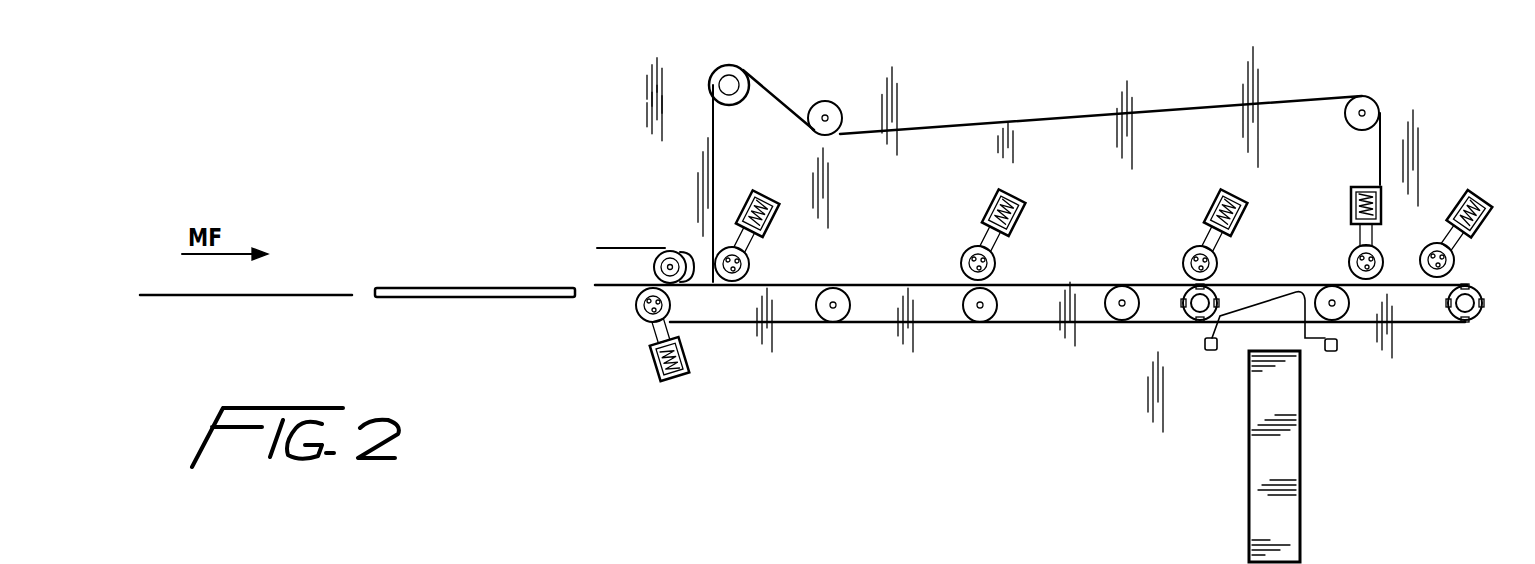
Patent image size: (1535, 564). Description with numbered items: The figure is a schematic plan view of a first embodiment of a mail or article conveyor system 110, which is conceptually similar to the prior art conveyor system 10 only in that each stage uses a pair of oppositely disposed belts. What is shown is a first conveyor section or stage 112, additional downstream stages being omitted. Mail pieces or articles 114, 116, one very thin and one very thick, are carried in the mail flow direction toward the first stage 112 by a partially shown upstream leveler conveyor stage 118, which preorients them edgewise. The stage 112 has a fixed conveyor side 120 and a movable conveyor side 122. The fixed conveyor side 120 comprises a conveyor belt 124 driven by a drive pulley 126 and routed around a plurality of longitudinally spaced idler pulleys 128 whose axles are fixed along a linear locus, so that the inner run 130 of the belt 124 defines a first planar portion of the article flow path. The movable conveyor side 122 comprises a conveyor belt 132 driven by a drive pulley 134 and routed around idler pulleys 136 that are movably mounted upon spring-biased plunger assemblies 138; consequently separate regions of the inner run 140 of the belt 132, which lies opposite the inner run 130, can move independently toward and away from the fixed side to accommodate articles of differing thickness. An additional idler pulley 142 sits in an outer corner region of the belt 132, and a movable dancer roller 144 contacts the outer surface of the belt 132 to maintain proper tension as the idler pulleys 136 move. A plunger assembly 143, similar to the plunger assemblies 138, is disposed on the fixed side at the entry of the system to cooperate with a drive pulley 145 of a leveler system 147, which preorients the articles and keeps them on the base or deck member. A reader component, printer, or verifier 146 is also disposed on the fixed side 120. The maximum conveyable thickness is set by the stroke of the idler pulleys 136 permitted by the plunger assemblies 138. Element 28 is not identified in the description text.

The prior art conveyor system 10 is at (800, 563).
The insulation layer 28 is at (633, 552).
The conveyor system 110 is at (970, 80).
The first conveyor section or stage 112 is at (621, 126).
The mail piece or article 114 is at (165, 295).
The mail piece or article 116 is at (402, 288).
The upstream leveler conveyor stage 118 is at (626, 268).
The fixed conveyor side 120 is at (1042, 421).
The movable conveyor side 122 is at (1086, 179).
The conveyor belt 124 is at (722, 323).
The drive pulley 126 is at (1195, 322).
The idler pulleys 128 is at (833, 323).
The inner run 130 is at (923, 287).
The conveyor belt 132 is at (1088, 115).
The drive pulley 134 is at (714, 74).
The idler pulleys 136 is at (742, 278).
The spring-biased plunger assemblies 138 is at (750, 210).
The inner run 140 is at (890, 284).
The additional idler pulley 142 is at (1376, 104).
The plunger assembly 143 is at (648, 358).
The dancer roller 144 is at (810, 106).
The drive pulley 145 is at (665, 252).
The reader component, printer, or verifier 146 is at (1296, 400).
The leveler system 147 is at (611, 244).